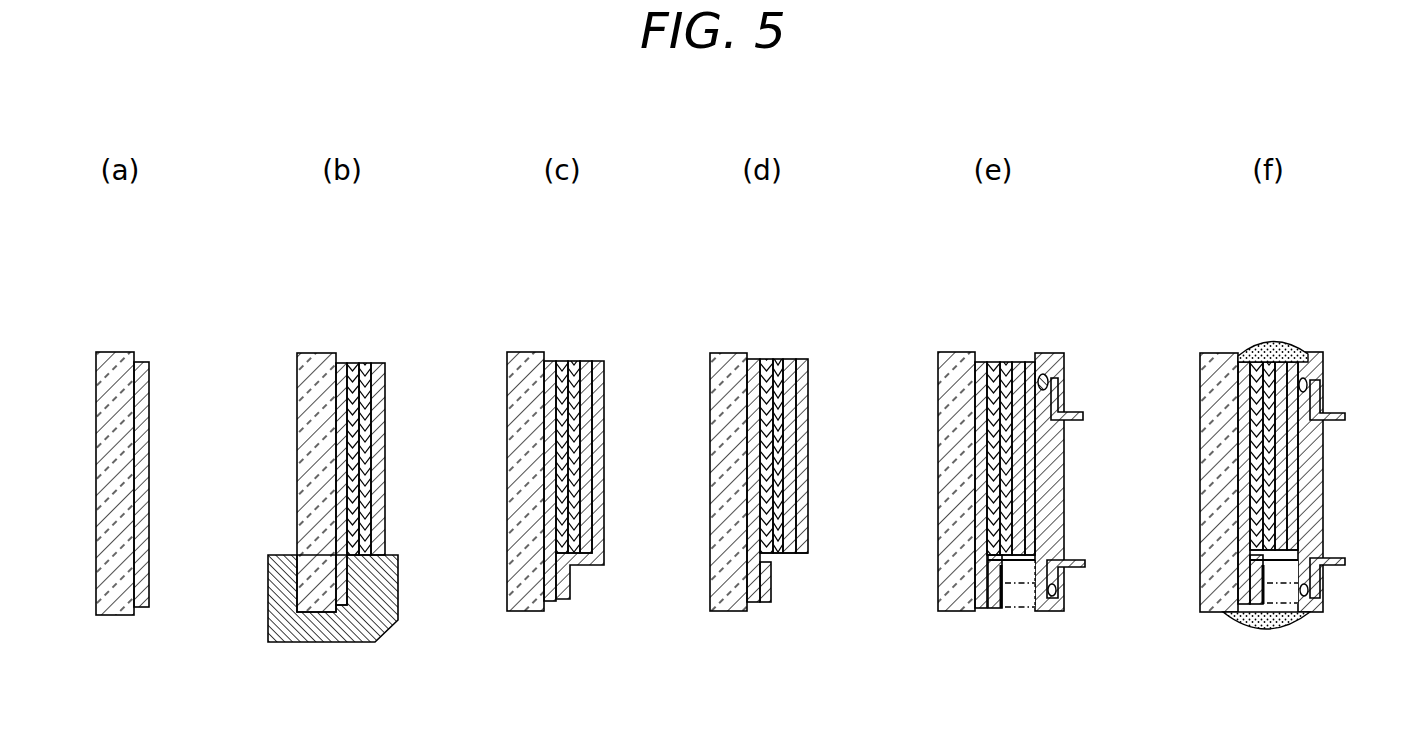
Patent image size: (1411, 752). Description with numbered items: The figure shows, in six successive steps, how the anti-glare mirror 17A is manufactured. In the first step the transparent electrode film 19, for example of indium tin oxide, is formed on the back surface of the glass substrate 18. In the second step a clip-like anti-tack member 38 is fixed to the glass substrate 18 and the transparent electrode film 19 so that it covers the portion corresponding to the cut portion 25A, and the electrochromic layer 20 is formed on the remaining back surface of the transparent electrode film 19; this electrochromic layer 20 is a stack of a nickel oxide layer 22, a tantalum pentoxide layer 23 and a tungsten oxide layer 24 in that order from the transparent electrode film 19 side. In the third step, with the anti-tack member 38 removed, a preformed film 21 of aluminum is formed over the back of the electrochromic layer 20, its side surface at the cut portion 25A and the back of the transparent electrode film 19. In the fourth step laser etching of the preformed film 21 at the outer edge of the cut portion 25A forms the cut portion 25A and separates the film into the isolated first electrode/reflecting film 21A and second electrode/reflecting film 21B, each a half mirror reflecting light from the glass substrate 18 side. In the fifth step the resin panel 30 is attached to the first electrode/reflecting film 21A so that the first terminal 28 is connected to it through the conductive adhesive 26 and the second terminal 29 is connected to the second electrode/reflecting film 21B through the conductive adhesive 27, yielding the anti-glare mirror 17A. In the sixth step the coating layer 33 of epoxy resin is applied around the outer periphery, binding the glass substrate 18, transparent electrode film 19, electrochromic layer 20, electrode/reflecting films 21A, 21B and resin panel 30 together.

The anti-glare mirror 17A is at (1183, 491).
The glass substrate 18 is at (104, 372).
The transparent electrode film 19 is at (140, 360).
The electrochromic layer 20 is at (809, 393).
The preformed film 21 is at (600, 437).
The first electrode/reflecting film 21A is at (809, 448).
The second electrode/reflecting film 21B is at (769, 592).
The nickel oxide layer 22 is at (357, 477).
The tantalum pentoxide layer 23 is at (365, 362).
The tungsten oxide layer 24 is at (378, 460).
The cut portion 25A is at (785, 550).
The conductive adhesive 26 is at (1041, 374).
The conductive adhesive 27 is at (1007, 604).
The first terminal 28 is at (1059, 398).
The second terminal 29 is at (1068, 568).
The resin panel 30 is at (1050, 448).
The coating layer 33 is at (1275, 345).
The anti-tack member 38 is at (312, 626).